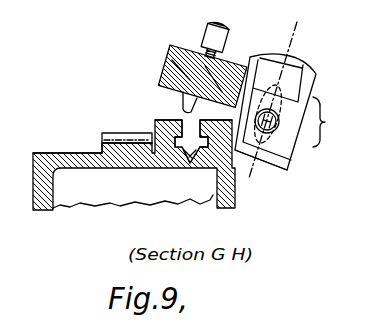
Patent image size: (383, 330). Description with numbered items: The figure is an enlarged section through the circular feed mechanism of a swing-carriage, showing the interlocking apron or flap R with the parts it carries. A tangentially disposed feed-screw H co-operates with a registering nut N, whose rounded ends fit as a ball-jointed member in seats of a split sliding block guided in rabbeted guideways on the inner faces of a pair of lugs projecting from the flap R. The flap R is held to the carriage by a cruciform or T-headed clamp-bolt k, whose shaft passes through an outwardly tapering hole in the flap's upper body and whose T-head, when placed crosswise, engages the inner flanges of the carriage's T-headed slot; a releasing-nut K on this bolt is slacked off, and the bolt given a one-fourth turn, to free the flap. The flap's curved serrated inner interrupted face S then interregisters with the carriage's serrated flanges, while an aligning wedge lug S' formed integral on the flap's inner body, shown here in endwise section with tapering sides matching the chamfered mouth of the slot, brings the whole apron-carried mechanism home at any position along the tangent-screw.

The releasing-nut K is at (214, 30).
The cruciform or T-headed clamp-bolt k is at (192, 33).
The serrated inner interrupted face S is at (193, 127).
The aligning wedge lug S' is at (143, 123).
The swing-carriage apron or flap R is at (291, 100).
The registering nut N is at (270, 114).
The feed-screw H is at (267, 121).